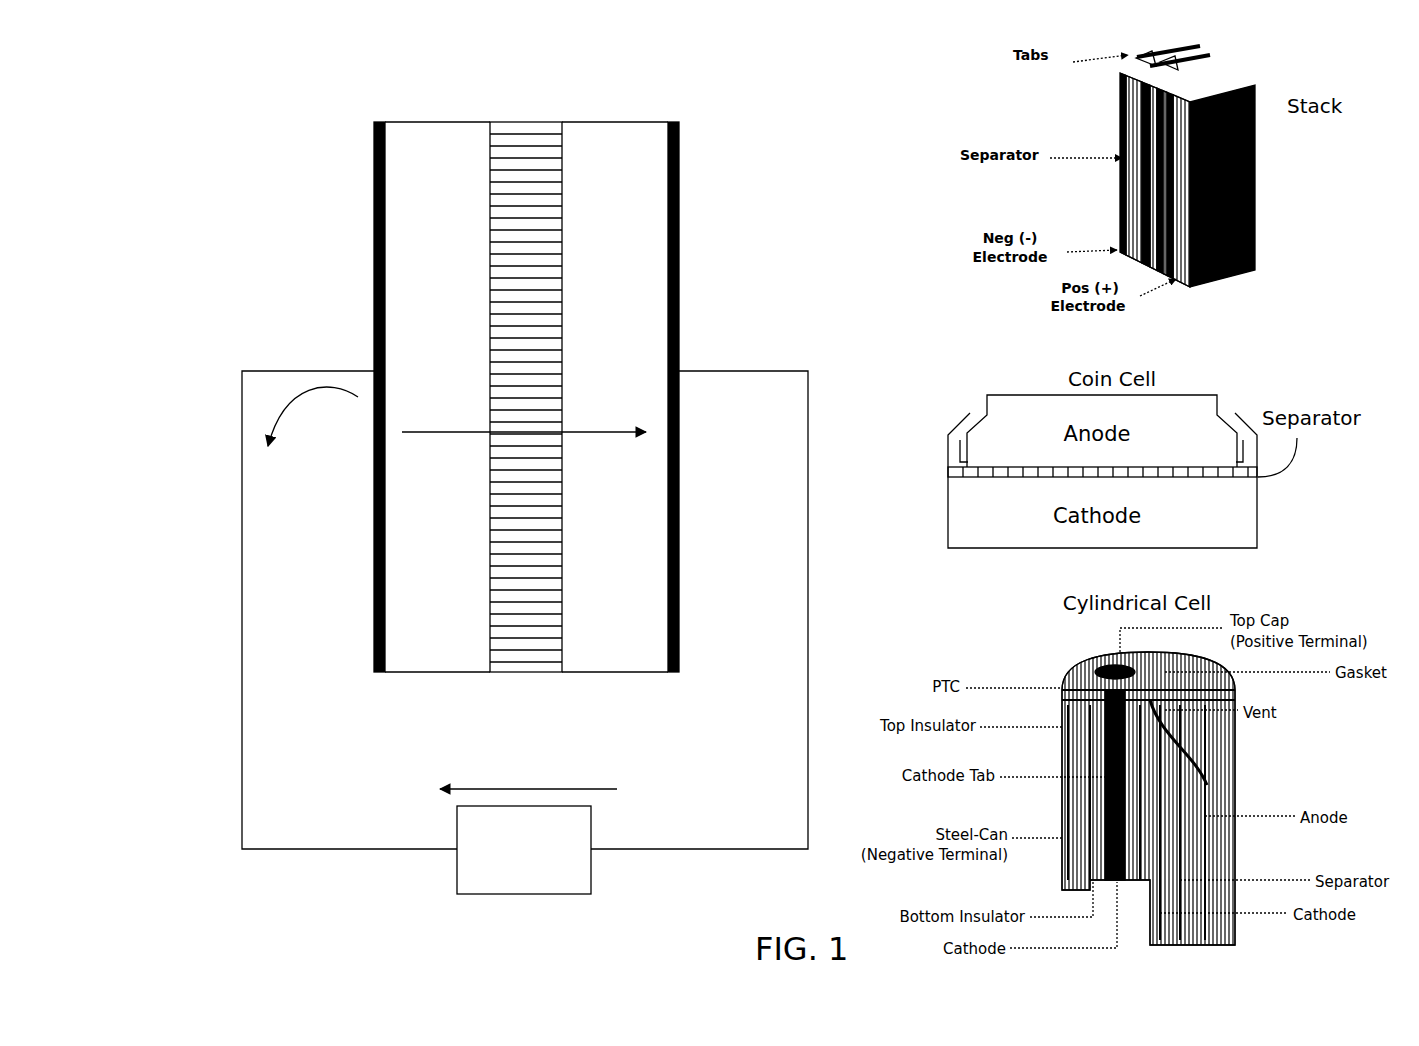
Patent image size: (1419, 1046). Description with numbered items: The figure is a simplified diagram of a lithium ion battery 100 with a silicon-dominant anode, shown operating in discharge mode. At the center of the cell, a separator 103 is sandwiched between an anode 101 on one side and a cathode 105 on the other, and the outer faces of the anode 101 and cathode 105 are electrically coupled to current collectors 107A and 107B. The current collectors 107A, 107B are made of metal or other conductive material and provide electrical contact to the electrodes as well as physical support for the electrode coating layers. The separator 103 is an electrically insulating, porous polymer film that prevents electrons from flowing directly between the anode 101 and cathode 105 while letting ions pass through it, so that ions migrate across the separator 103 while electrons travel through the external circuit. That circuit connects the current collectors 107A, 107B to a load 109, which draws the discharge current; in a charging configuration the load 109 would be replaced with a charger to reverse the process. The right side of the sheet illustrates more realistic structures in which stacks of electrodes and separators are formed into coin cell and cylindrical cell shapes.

The battery 100 is at (222, 127).
The anode 101 is at (437, 397).
The separator 103 is at (528, 121).
The cathode 105 is at (615, 397).
The current collector 107A is at (372, 143).
The current collector 107B is at (681, 143).
The load 109 is at (524, 850).